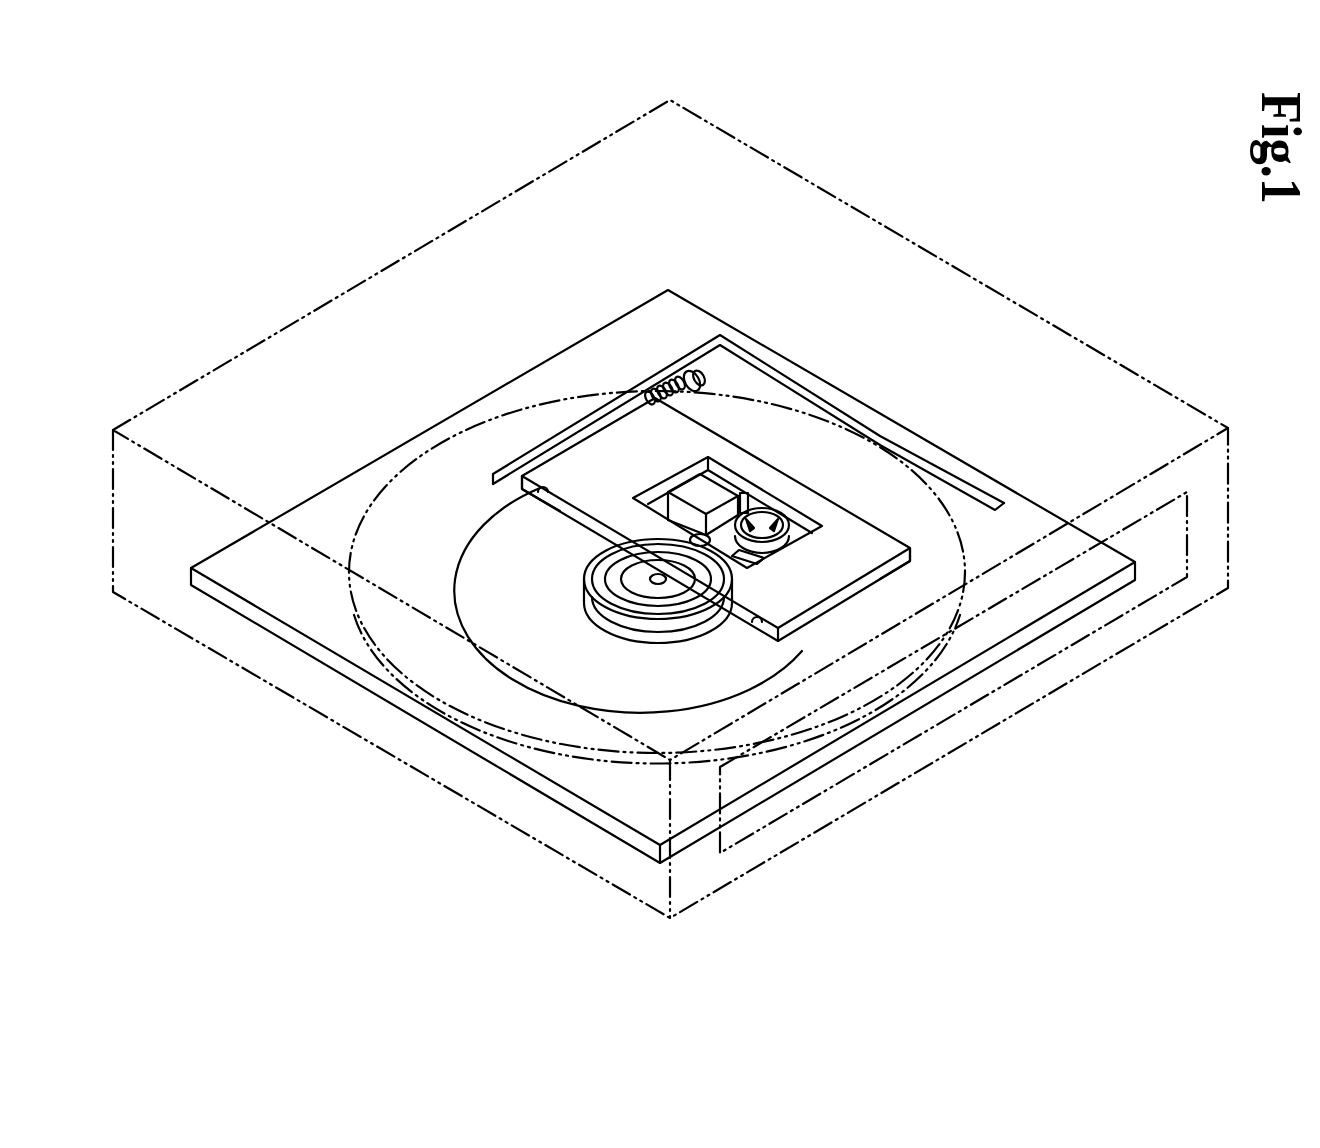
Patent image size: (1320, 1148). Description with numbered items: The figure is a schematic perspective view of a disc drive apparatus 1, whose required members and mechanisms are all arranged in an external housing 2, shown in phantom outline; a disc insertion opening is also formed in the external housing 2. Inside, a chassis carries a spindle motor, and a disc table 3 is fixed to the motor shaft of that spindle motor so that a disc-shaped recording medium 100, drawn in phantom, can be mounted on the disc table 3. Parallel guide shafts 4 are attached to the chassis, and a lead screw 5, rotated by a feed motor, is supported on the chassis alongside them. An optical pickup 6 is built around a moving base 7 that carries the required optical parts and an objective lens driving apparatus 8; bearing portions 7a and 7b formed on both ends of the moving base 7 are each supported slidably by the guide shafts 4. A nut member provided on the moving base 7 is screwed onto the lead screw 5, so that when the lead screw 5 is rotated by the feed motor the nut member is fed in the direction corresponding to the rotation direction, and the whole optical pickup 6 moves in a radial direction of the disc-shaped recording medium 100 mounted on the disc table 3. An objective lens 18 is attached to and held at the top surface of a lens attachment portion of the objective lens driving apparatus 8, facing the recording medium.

The disc drive apparatus 1 is at (947, 186).
The external housing 2 is at (722, 128).
The disc table 3 is at (625, 597).
The guide shafts 4 is at (740, 340).
The lead screw 5 is at (661, 393).
The optical pickup 6 is at (815, 577).
The moving base 7 is at (783, 597).
The bearing portion 7a is at (560, 478).
The bearing portion 7b is at (843, 563).
The objective lens driving apparatus 8 is at (610, 530).
The objective lens 18 is at (760, 523).
The disc-shaped recording medium 100 is at (585, 390).